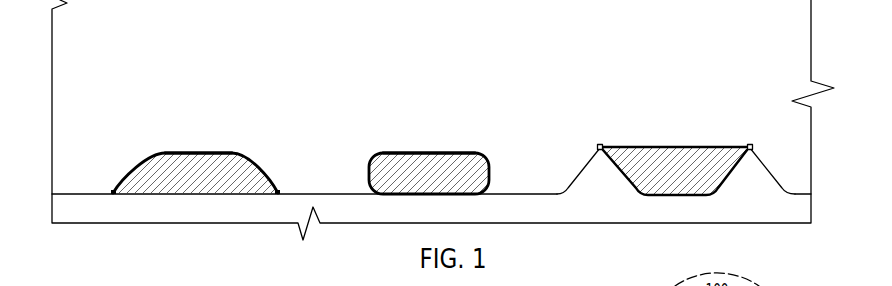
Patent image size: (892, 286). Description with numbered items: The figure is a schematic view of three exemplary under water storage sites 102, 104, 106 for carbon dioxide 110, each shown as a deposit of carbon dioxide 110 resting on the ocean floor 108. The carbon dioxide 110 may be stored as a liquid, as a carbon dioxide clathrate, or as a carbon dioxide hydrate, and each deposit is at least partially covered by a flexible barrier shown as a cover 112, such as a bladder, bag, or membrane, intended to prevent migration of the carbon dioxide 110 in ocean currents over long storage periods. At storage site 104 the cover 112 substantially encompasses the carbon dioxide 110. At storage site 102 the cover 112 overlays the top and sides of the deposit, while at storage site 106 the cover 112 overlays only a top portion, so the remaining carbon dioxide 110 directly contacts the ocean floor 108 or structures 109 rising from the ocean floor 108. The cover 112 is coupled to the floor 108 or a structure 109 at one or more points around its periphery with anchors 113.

The storage site 102 is at (224, 98).
The storage site 104 is at (447, 99).
The storage site 106 is at (713, 99).
The ocean floor 108 is at (87, 193).
The structure rising from ocean floor 109 is at (590, 167).
The carbon dioxide 110 is at (192, 167).
The cover 112 is at (232, 152).
The anchor 113 is at (114, 192).